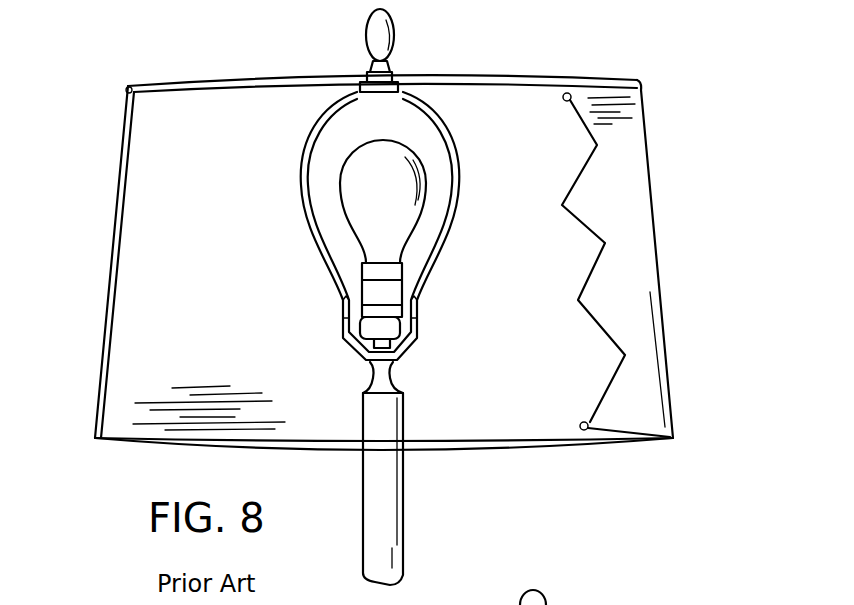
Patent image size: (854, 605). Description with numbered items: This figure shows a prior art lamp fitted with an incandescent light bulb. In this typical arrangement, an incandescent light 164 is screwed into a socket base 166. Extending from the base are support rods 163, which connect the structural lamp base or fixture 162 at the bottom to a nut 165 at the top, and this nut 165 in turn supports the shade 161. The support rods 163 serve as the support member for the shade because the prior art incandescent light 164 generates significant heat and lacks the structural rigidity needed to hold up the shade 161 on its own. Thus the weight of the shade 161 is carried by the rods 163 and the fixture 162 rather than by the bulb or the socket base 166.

The shade 161 is at (108, 250).
The structural lamp base or fixture 162 is at (403, 503).
The support rods 163 is at (308, 122).
The incandescent light 164 is at (340, 186).
The nut 165 is at (390, 72).
The socket base 166 is at (405, 272).